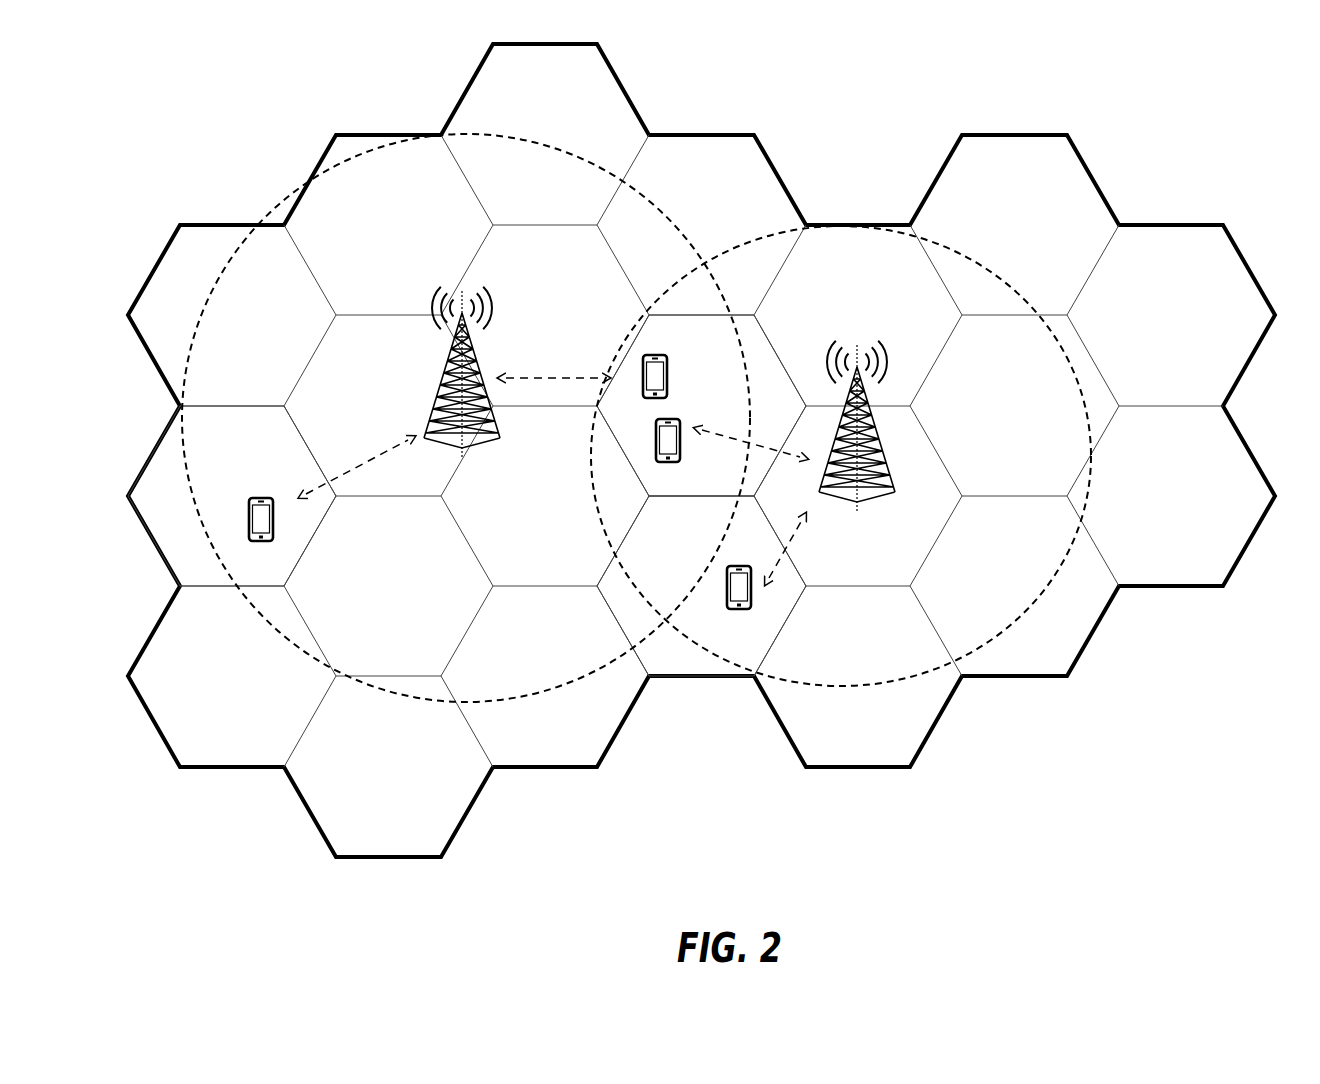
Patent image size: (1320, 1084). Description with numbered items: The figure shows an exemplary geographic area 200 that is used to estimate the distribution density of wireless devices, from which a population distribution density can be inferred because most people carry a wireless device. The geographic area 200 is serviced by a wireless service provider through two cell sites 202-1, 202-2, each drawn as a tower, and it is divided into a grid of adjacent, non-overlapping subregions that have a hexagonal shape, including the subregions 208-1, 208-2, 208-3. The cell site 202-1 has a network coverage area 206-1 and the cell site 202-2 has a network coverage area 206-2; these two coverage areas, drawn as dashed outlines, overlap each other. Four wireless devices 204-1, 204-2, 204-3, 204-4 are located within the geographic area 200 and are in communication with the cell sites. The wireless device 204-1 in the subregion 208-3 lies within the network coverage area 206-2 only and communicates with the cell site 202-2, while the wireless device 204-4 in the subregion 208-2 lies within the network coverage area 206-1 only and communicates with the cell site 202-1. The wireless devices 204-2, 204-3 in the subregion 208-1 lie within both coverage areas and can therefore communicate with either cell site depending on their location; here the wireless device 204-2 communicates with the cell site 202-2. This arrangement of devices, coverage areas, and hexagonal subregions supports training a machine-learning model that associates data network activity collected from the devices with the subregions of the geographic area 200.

The geographic area 200 is at (1136, 671).
The cell site 202-1 is at (858, 494).
The cell site 202-2 is at (465, 442).
The wireless device 204-1 is at (256, 497).
The wireless device 204-2 is at (644, 371).
The wireless device 204-3 is at (655, 447).
The wireless device 204-4 is at (727, 580).
The network coverage area 206-1 is at (863, 232).
The network coverage area 206-2 is at (273, 213).
The subregion 208-1 is at (723, 342).
The subregion 208-2 is at (699, 667).
The subregion 208-3 is at (191, 507).